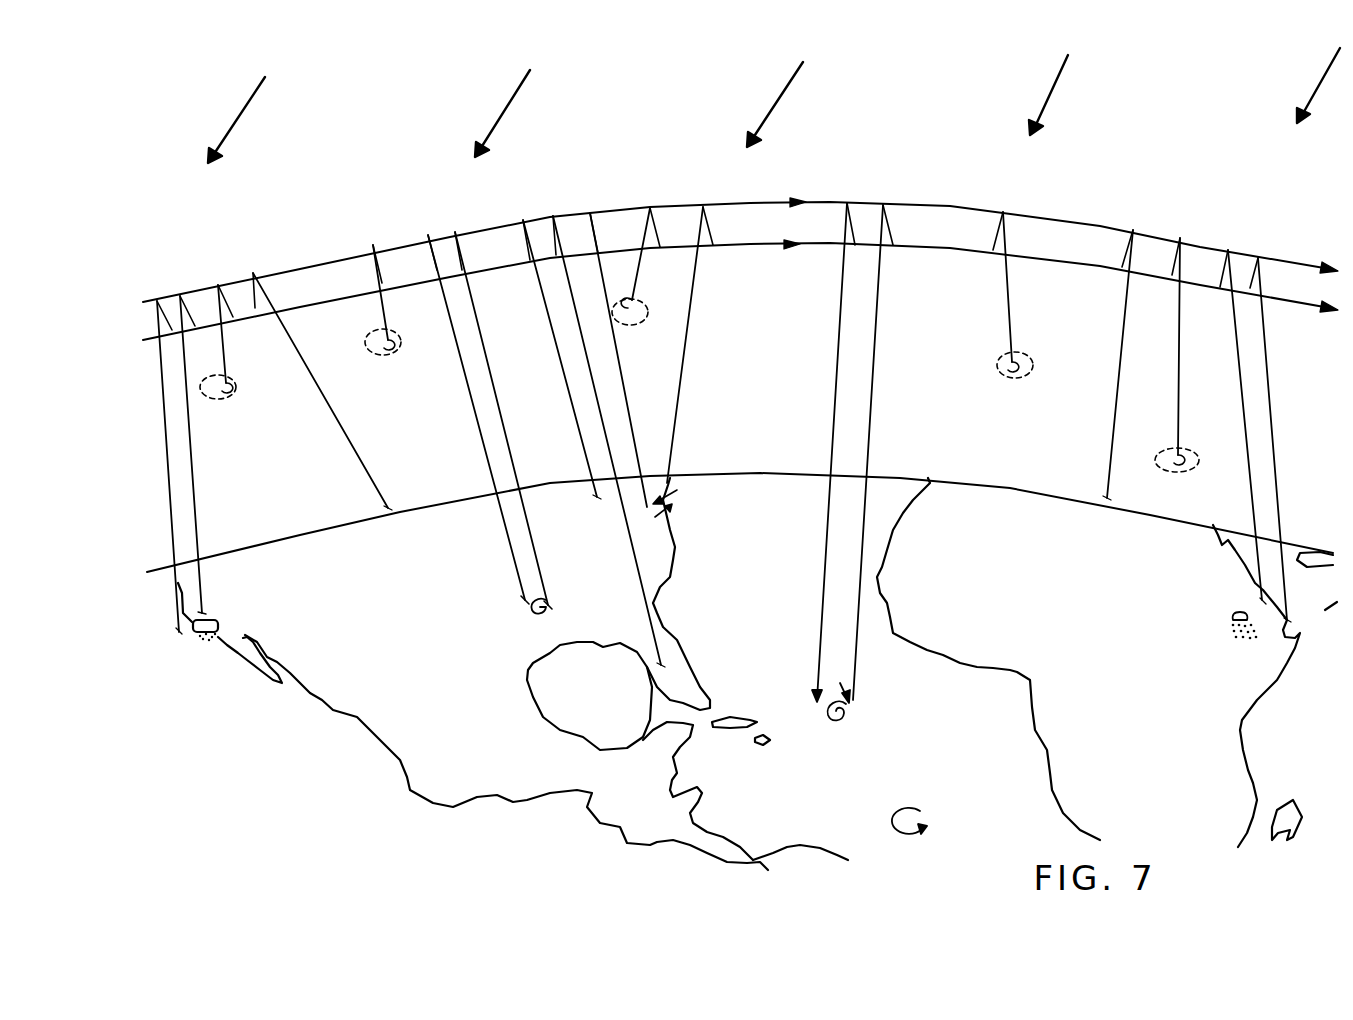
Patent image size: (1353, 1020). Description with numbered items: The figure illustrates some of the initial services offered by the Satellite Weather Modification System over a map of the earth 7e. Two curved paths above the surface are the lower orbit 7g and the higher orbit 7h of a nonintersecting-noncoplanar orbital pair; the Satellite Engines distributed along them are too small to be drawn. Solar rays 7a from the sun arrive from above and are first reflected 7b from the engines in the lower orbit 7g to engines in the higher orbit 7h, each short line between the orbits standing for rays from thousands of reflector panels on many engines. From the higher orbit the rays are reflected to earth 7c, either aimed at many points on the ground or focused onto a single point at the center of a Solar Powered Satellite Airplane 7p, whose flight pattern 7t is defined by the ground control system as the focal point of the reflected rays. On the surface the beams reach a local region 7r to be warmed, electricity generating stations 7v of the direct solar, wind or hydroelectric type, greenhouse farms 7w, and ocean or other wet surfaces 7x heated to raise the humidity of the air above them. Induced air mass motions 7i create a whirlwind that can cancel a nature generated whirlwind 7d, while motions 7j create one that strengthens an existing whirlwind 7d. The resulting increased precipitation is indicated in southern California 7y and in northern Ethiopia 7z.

The solar rays from the sun 7a is at (774, 102).
The solar rays reflected from SEs in lower orbit to SEs in higher orbit 7b is at (165, 299).
The solar rays reflected from higher orbit to earth or to SPSA 7c is at (711, 451).
The nature generated whirlwinds 7d is at (740, 717).
The earth 7e is at (147, 572).
The lower orbit of a nonintersecting-noncoplanar orbital pair 7g is at (143, 340).
The higher orbit of a nonintersecting-noncoplanar orbital pair 7h is at (143, 302).
The directions of air mass motions induced by SWMS 7i is at (533, 602).
The direction of air mass motions induced by SWMS 7j is at (838, 706).
The Solar Powered Satellite Airplane (SPSA) 7p is at (703, 388).
The local region to be warmed by solar energy 7r is at (439, 636).
The SPSA flight pattern 7t is at (712, 387).
The electricity generating stations 7v is at (747, 497).
The greenhouse farms 7w is at (668, 506).
The ocean or other wet surfaces to be heated 7x is at (740, 621).
The increased precipitation in southern California 7y is at (220, 623).
The increased precipitation in northern Ethiopia 7z is at (1226, 627).